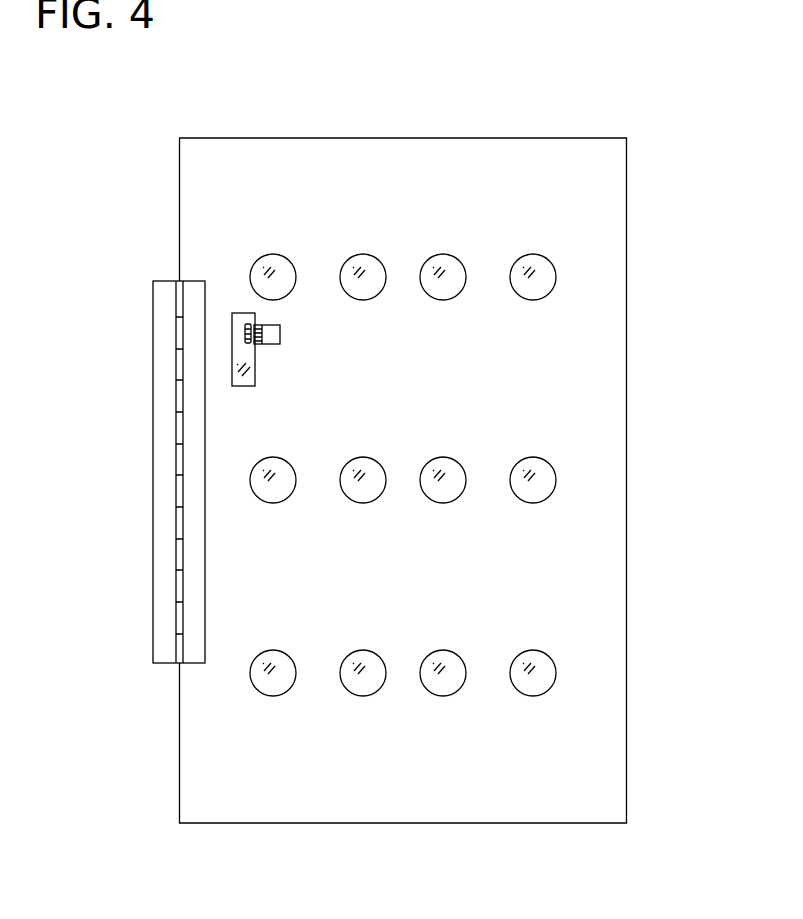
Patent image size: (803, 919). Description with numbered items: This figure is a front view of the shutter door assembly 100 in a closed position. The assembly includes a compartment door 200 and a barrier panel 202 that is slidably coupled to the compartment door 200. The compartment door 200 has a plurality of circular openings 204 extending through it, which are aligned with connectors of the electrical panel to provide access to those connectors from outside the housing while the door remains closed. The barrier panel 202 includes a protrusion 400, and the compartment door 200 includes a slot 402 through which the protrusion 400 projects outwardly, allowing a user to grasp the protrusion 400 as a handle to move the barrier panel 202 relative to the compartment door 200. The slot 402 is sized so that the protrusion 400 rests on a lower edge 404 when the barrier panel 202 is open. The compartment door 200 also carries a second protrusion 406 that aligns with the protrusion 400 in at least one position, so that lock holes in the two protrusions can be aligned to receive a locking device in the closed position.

The electrical panel 100 is at (449, 435).
The compartment door 200 is at (573, 597).
The barrier panel 202 is at (538, 488).
The openings 204 is at (552, 463).
The protrusion 400 is at (246, 335).
The slot 402 is at (241, 318).
The lower edge 404 is at (252, 387).
The second protrusion 406 is at (270, 334).